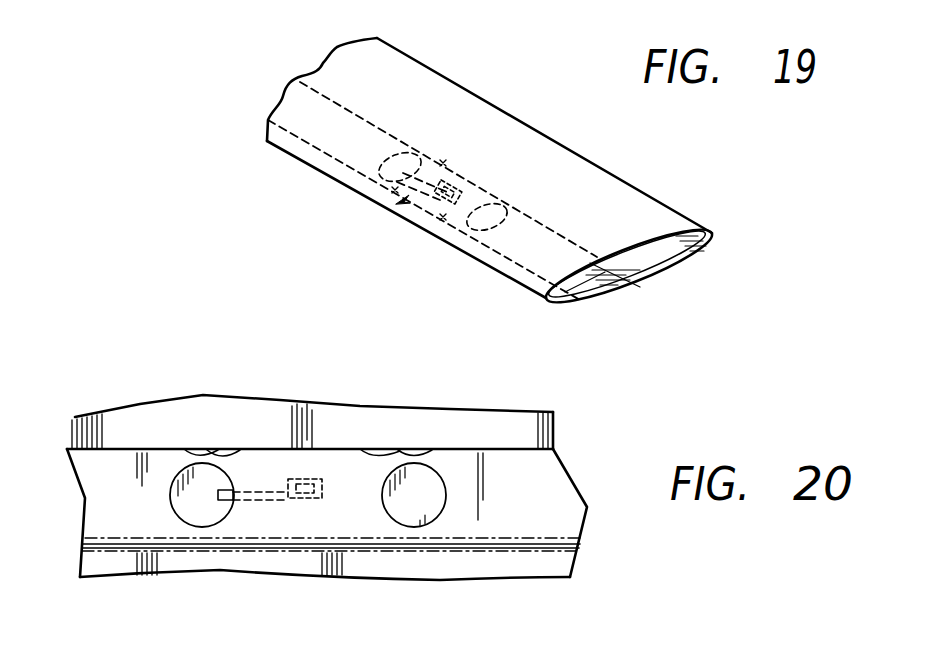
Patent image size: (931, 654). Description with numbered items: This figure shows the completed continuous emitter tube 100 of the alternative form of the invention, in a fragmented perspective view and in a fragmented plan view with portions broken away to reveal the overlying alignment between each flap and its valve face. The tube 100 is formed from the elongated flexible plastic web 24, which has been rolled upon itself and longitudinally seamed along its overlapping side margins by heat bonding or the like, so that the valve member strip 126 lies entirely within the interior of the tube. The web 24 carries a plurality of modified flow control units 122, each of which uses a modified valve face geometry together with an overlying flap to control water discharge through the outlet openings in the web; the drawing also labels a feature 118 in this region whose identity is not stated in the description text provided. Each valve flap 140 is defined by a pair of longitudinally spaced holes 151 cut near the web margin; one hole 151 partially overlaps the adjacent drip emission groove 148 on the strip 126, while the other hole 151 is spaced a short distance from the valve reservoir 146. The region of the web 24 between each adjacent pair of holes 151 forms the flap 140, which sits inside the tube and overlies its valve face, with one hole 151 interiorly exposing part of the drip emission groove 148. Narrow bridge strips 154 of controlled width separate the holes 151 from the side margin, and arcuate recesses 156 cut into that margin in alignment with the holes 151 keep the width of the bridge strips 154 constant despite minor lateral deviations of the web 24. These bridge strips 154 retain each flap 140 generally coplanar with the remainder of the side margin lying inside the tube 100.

In FIG. 19, the elongated flexible plastic web 24 is at (695, 258).
In FIG. 20, the elongated flexible plastic web 24 is at (517, 430).
In FIG. 19, the continuous emitter tube 100 is at (350, 190).
In FIG. 20, the continuous emitter tube 100 is at (140, 404).
In FIG. 19, the apertures 118 is at (452, 188).
In FIG. 19, the modified flow control unit 122 is at (395, 190).
In FIG. 20, the modified flow control unit 122 is at (252, 512).
In FIG. 19, the valve member strip 126 is at (632, 296).
In FIG. 20, the valve member strip 126 is at (553, 480).
In FIG. 19, the valve flap 140 is at (443, 166).
In FIG. 20, the valve flap 140 is at (292, 462).
In FIG. 19, the valve reservoir 146 is at (445, 193).
In FIG. 20, the valve reservoir 146 is at (300, 500).
In FIG. 19, the drip emission groove 148 is at (385, 193).
In FIG. 20, the drip emission groove 148 is at (218, 499).
In FIG. 20, the hole 151 is at (176, 511).
In FIG. 20, the bridge strip 154 is at (242, 449).
In FIG. 20, the arcuate recess 156 is at (203, 449).